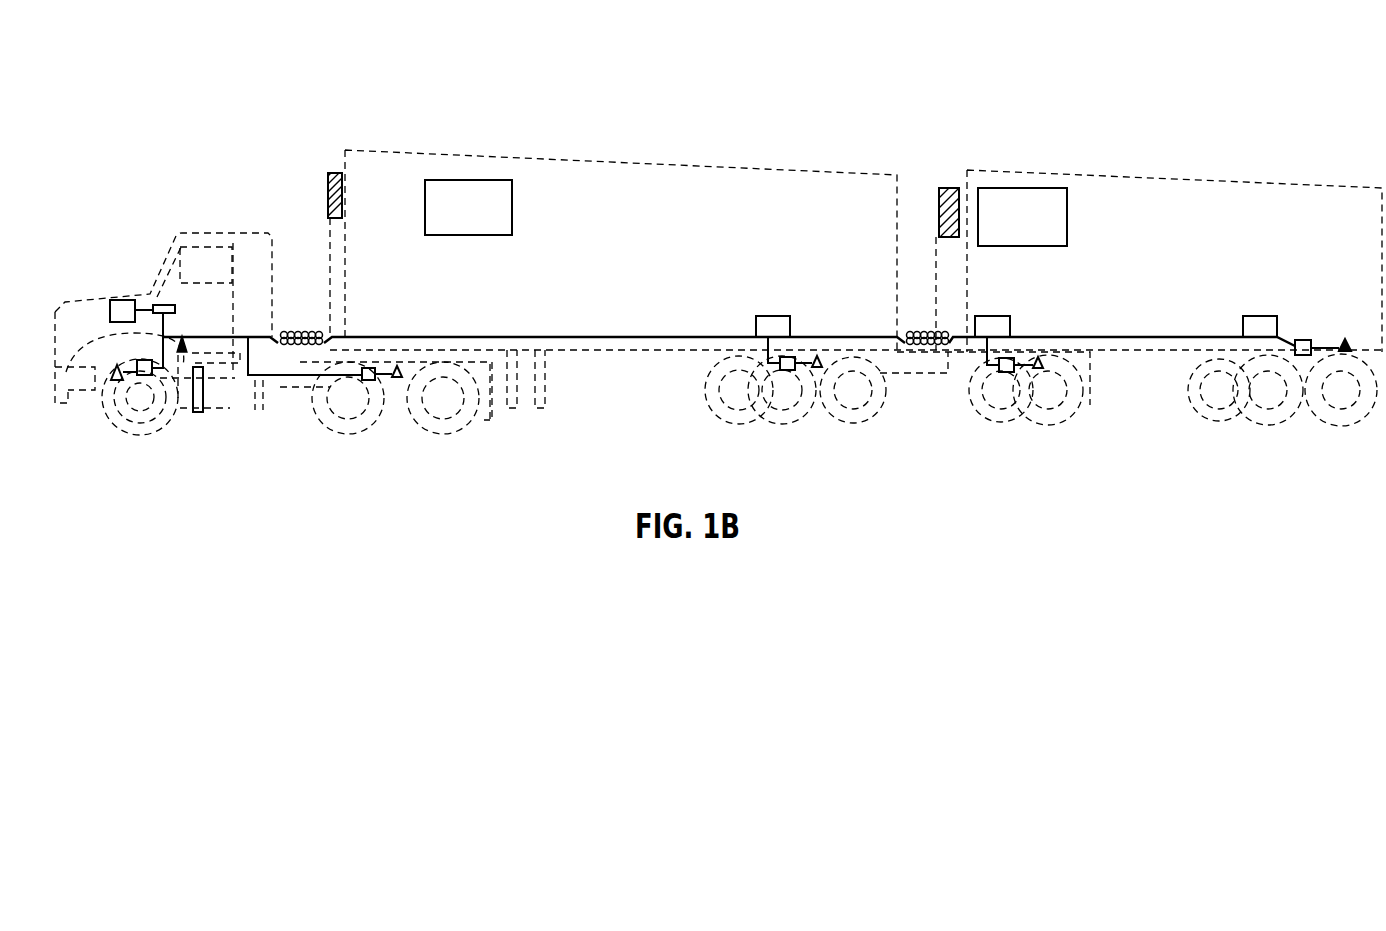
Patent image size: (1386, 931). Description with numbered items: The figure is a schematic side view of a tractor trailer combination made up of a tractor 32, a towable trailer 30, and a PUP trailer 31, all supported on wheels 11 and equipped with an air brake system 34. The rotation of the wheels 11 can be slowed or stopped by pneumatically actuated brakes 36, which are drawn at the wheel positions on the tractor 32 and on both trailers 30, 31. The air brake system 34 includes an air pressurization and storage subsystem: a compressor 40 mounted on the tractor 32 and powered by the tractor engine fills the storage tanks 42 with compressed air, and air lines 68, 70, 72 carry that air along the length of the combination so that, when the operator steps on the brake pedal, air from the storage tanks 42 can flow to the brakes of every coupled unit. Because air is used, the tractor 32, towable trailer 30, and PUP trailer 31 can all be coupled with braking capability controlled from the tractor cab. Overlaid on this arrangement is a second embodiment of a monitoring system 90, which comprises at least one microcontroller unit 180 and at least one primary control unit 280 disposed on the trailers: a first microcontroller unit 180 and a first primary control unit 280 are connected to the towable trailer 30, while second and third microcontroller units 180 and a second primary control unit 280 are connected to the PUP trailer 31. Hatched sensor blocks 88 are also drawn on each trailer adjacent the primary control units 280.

The monitoring system 90 is at (435, 62).
The tractor 32 is at (83, 297).
The towable trailer 30 is at (708, 165).
The PUP trailer 31 is at (1222, 180).
The air brake system 34 is at (557, 362).
The air line 72 is at (533, 337).
The compressor 40 is at (137, 300).
The air line 68 is at (163, 305).
The storage tank 42 is at (182, 352).
The pneumatically actuated brake 36 is at (145, 376).
The air line 70 is at (337, 338).
The sensor unit 88 is at (335, 173).
The primary control unit 280 is at (490, 180).
The microcontroller unit 180 is at (770, 316).
The wheel 11 is at (112, 430).